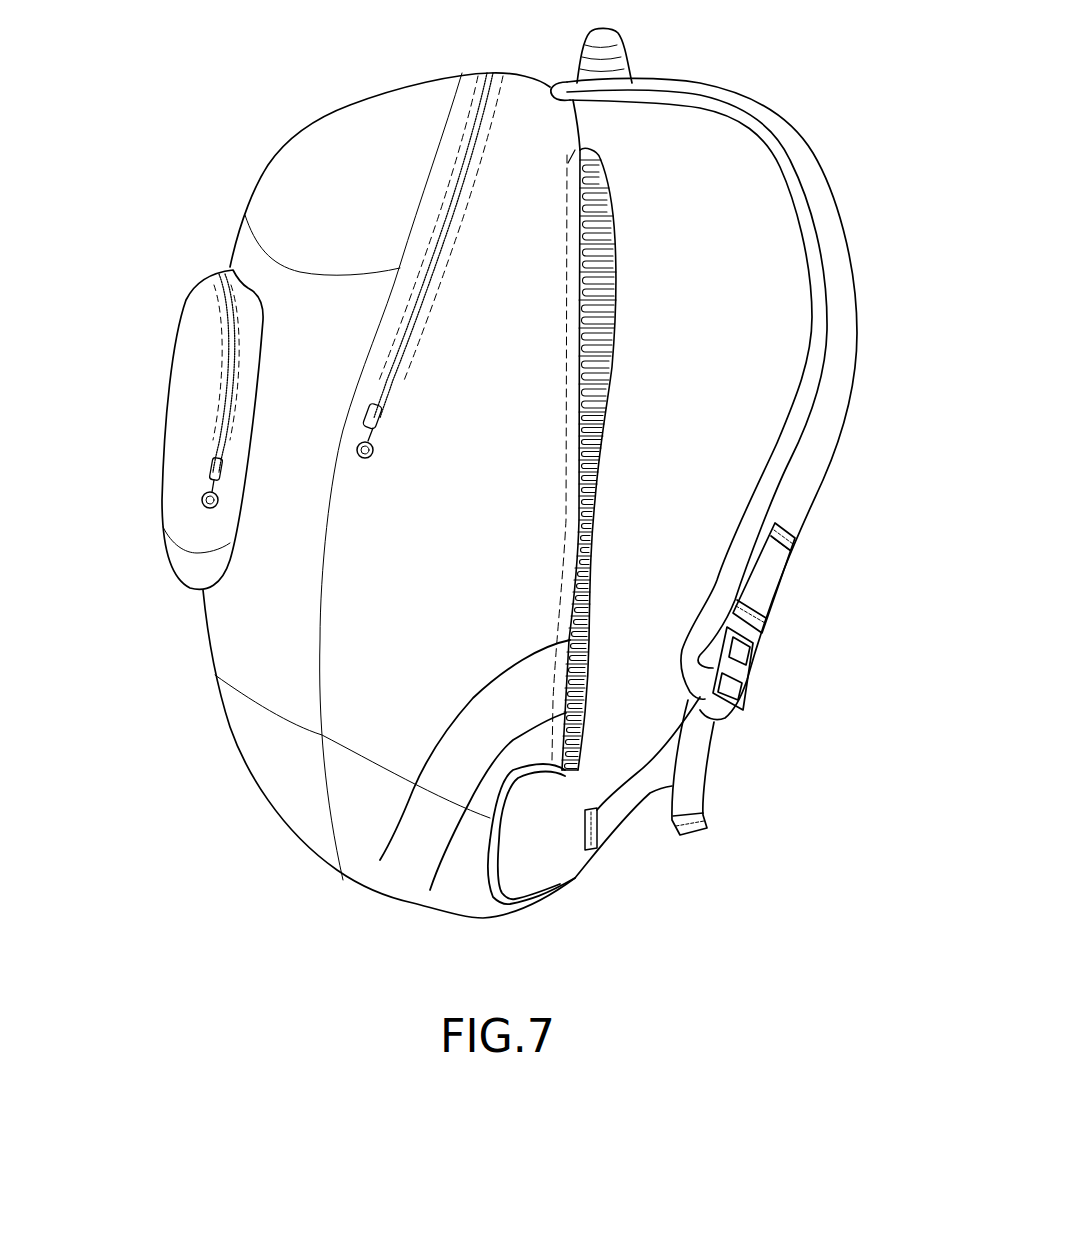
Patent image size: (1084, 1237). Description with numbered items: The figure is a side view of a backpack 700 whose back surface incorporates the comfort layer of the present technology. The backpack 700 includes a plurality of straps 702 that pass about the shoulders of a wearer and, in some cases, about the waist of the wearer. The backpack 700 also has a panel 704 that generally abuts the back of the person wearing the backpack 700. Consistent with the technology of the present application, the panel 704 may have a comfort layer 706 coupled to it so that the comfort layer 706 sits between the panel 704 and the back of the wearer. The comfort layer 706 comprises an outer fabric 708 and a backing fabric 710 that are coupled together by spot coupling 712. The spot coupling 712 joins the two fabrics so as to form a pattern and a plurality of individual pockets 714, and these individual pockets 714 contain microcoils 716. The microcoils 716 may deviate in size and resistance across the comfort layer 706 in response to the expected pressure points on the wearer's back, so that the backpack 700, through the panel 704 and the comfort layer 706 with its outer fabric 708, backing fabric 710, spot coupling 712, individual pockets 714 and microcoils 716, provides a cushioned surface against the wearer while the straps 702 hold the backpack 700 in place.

The backpack 700 is at (183, 266).
The straps 702 is at (777, 110).
The panel 704 is at (430, 890).
The comfort layer 706 is at (541, 769).
The outer fabric 708 is at (592, 582).
The backing fabric 710 is at (380, 860).
The spot coupling 712 is at (613, 335).
The individual pockets 714 is at (612, 357).
The microcoils 716 is at (612, 243).